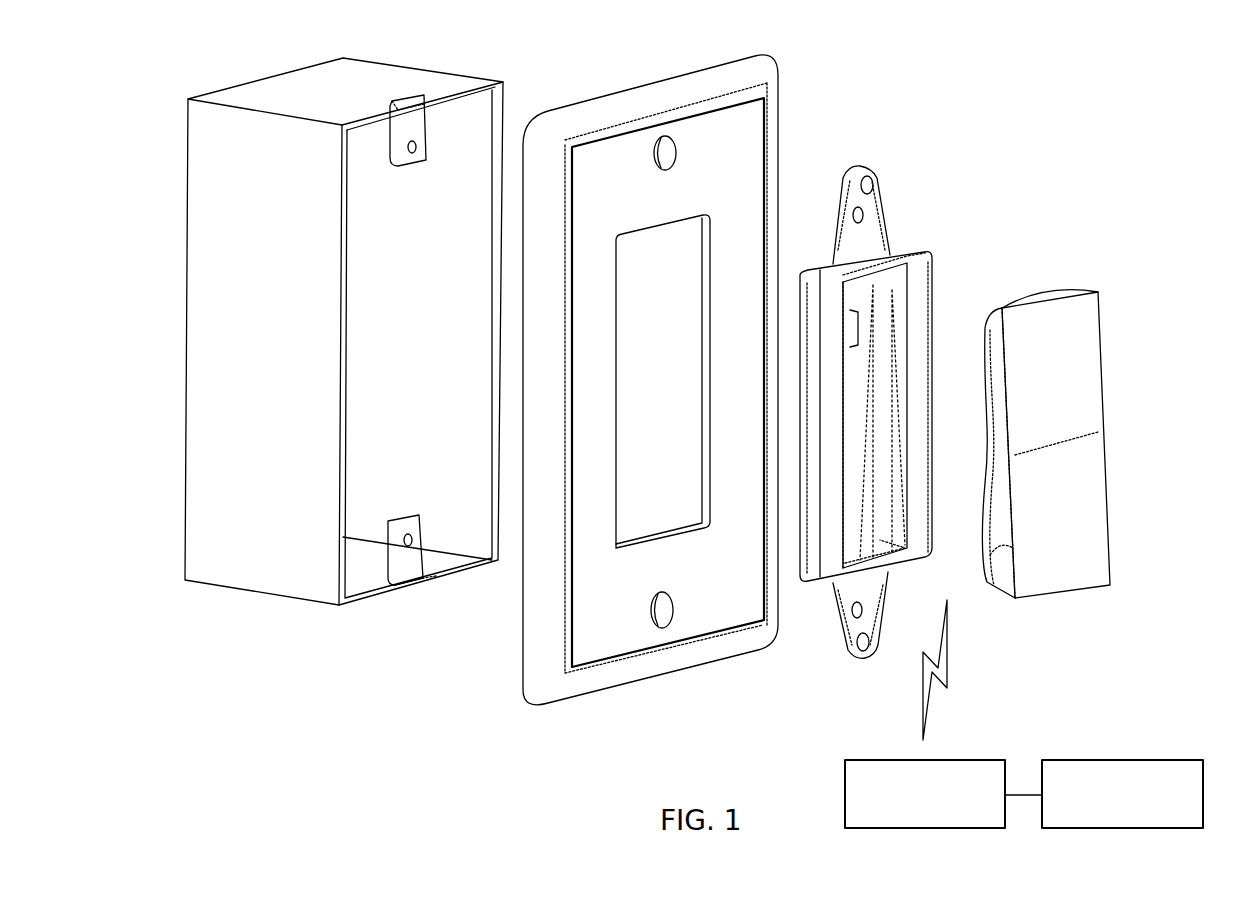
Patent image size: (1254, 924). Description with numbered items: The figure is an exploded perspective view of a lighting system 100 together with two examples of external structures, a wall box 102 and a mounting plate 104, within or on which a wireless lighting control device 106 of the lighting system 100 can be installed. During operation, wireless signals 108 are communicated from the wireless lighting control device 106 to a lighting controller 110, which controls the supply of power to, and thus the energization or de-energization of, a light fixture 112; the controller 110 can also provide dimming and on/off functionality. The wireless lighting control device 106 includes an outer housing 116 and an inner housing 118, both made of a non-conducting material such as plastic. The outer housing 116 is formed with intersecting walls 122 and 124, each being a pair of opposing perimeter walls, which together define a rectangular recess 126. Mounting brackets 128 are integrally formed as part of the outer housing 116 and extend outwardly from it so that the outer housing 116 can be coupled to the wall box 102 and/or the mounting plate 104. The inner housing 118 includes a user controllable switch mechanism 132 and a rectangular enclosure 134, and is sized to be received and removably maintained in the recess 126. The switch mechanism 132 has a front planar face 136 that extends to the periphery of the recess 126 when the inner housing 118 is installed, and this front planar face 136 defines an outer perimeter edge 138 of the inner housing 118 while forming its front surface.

The lighting system 100 is at (1117, 90).
The wall box 102 is at (388, 72).
The mounting plate 104 is at (670, 74).
The wireless lighting control device 106 is at (1047, 140).
The wireless signals 108 is at (920, 676).
The lighting controller 110 is at (872, 760).
The light fixture 112 is at (1163, 760).
The outer housing 116 is at (843, 170).
The inner housing 118 is at (1058, 455).
The walls 122 is at (900, 250).
The walls 124 is at (935, 292).
The recess 126 is at (864, 388).
The mounting brackets 128 is at (882, 185).
The user controllable switch mechanism 132 is at (1058, 415).
The enclosure 134 is at (1032, 300).
The front planar face 136 is at (1079, 418).
The outer perimeter edge 138 is at (1013, 545).